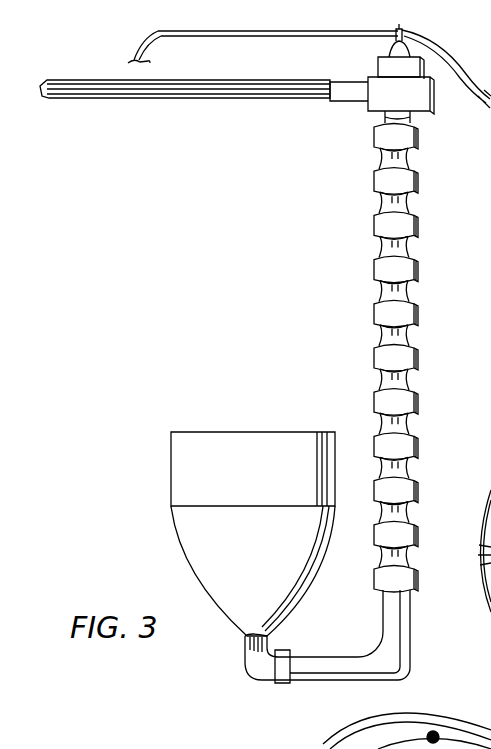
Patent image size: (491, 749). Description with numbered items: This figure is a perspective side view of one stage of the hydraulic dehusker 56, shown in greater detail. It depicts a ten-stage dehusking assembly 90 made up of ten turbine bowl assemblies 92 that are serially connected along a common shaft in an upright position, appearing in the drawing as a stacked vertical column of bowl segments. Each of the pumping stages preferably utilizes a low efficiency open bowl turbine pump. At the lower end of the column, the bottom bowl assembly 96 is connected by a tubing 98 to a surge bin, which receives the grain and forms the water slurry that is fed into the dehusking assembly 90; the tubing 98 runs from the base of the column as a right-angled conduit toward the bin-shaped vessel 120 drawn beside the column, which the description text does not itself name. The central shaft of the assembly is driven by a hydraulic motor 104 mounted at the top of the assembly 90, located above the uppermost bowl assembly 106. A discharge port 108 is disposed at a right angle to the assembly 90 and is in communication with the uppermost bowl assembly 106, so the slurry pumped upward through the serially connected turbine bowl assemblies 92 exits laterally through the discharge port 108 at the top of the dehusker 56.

The hydraulic dehusker 56 is at (246, 232).
The dehusking assembly 90 is at (228, 345).
The turbine bowl assemblies 92 is at (373, 312).
The bottom bowl assembly 96 is at (360, 655).
The tubing 98 is at (341, 661).
The hydraulic motor 104 is at (428, 67).
The uppermost bowl assembly 106 is at (383, 133).
The discharge port 108 is at (213, 90).
The funnel reservoir 120 is at (193, 520).